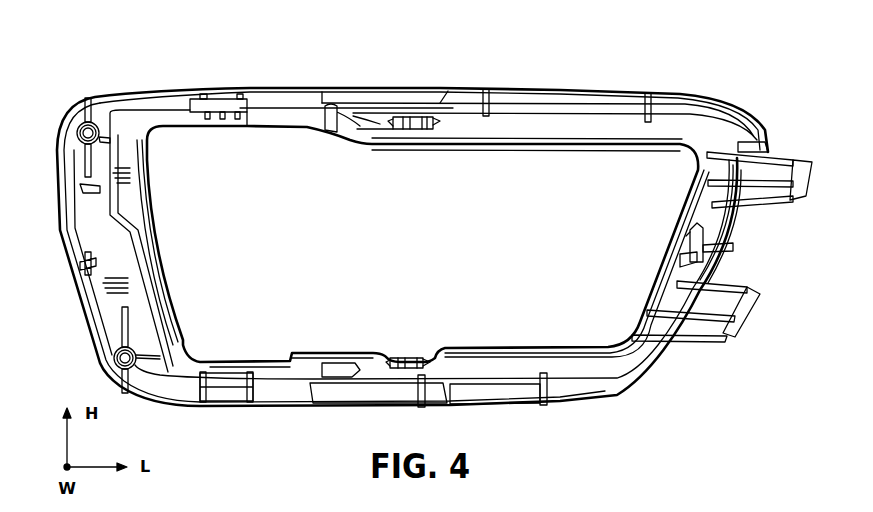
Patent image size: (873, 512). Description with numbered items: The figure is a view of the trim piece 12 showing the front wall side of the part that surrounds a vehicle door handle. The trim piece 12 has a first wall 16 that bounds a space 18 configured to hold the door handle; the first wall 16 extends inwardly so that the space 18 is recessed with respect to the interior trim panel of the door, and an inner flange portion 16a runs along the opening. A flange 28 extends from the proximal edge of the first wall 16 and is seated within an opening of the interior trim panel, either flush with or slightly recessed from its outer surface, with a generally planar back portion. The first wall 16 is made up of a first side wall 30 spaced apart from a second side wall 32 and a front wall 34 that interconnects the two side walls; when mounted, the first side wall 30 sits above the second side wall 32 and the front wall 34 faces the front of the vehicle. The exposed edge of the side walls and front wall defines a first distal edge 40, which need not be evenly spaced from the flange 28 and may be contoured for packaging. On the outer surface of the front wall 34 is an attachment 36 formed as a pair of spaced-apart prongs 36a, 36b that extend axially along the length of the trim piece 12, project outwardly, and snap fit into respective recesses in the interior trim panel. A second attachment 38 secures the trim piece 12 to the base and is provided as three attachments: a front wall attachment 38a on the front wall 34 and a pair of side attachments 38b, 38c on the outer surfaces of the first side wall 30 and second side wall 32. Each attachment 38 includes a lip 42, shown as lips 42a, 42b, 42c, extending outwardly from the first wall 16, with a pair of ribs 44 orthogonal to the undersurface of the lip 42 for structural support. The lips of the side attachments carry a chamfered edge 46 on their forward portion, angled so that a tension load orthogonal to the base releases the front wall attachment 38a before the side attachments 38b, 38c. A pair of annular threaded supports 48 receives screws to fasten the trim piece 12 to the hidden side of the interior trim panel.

The trim piece 12 is at (228, 449).
The first wall 16 is at (533, 120).
The inner flange 16a is at (168, 272).
The space 18 is at (321, 254).
The flange 28 is at (663, 93).
The first side wall 30 is at (460, 118).
The second side wall 32 is at (572, 403).
The front wall 34 is at (718, 228).
The attachment 36 is at (728, 242).
The prong 36a is at (808, 155).
The prong 36b is at (740, 323).
The attachment 38 is at (500, 232).
The front wall attachment 38a is at (703, 258).
The side attachment 38b is at (392, 122).
The side attachment 38c is at (368, 368).
The first distal edge 40 is at (517, 146).
The lip 42 is at (545, 242).
The lip 42a is at (690, 248).
The lip 42b is at (413, 130).
The lip 42c is at (410, 357).
The rib 44 is at (397, 128).
The chamfered edge 46 is at (440, 122).
The annular threaded support 48 is at (76, 132).